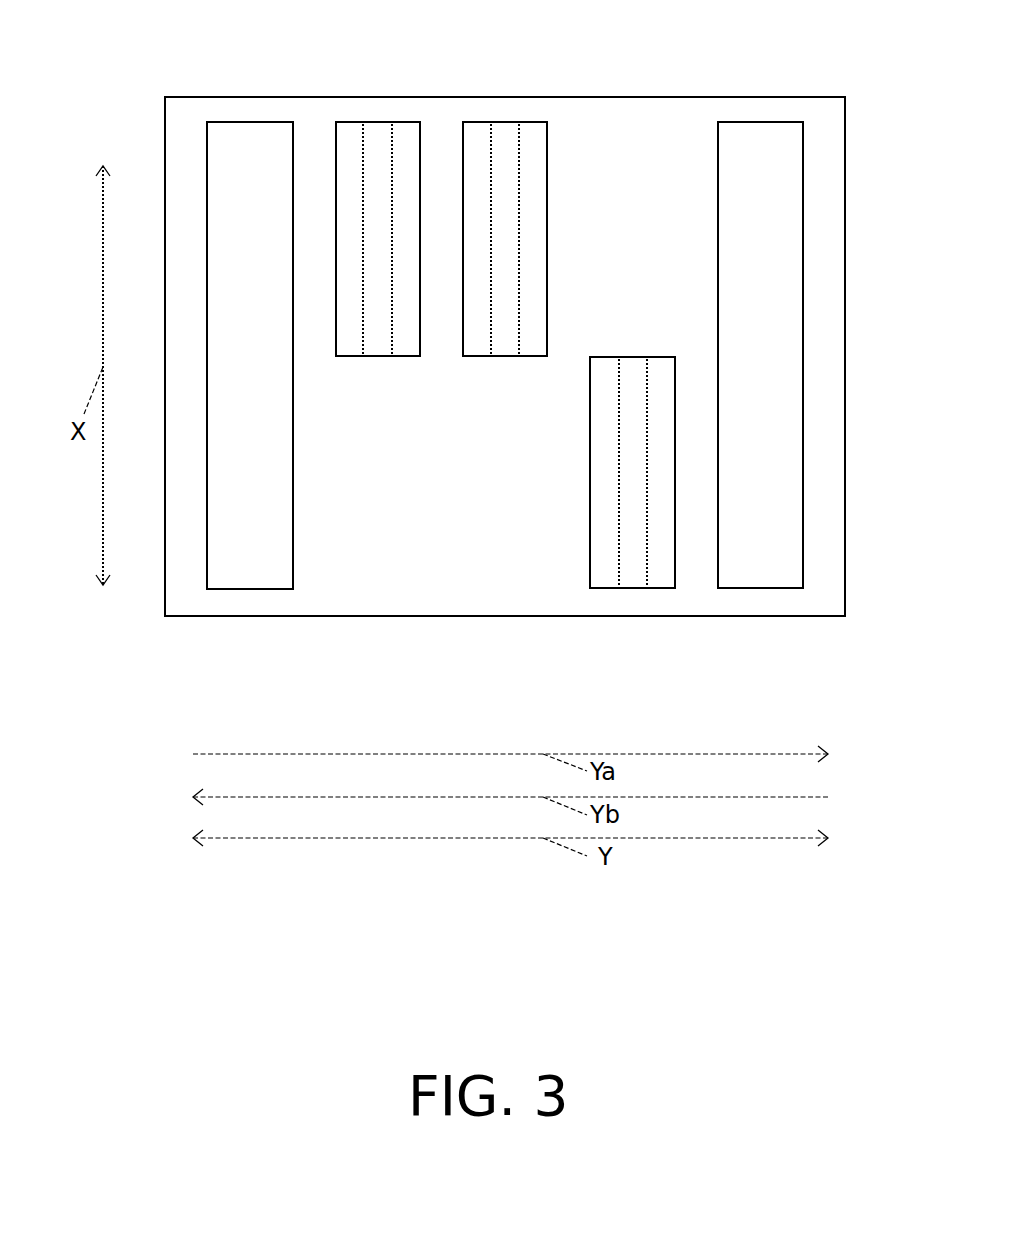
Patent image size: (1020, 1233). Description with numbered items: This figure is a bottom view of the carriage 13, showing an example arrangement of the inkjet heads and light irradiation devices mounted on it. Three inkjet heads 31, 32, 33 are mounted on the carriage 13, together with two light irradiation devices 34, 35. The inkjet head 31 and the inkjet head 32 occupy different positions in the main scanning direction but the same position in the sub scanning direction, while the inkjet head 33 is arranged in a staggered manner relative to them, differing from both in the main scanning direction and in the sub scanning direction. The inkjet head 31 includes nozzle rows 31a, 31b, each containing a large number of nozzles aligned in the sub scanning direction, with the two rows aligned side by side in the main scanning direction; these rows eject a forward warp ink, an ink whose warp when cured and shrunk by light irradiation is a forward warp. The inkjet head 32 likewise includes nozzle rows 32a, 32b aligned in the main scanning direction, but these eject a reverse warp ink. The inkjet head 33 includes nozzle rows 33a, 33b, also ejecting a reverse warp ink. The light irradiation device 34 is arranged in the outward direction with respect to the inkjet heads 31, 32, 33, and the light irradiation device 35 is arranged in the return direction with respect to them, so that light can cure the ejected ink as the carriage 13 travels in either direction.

The carriage 13 is at (687, 93).
The inkjet head 31 is at (376, 152).
The nozzle row 31a is at (356, 109).
The nozzle row 31b is at (398, 108).
The inkjet head 32 is at (503, 152).
The nozzle row 32a is at (485, 108).
The nozzle row 32b is at (527, 108).
The inkjet head 33 is at (631, 560).
The nozzle row 33a is at (611, 604).
The nozzle row 33b is at (656, 604).
The light irradiation device 34 is at (765, 153).
The light irradiation device 35 is at (256, 153).